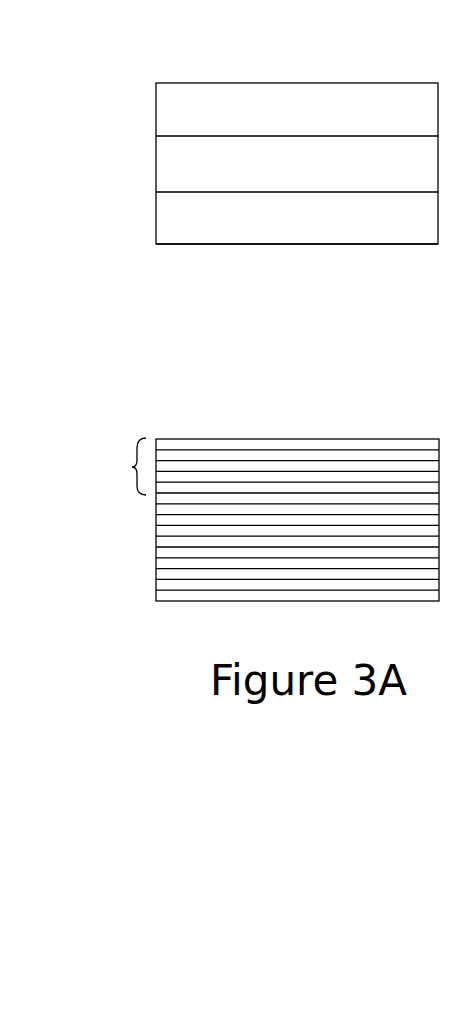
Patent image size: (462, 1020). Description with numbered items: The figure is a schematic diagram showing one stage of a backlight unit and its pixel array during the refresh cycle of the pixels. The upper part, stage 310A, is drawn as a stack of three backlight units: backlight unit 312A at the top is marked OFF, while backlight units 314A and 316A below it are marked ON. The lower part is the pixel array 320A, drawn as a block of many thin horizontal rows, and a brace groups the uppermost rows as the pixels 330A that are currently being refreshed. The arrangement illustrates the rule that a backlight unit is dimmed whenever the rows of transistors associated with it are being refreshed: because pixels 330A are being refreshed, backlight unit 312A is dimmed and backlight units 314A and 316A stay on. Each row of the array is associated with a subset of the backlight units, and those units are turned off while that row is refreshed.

The backlight unit stage 310A is at (252, 140).
The backlight unit 312A is at (155, 108).
The backlight unit 314A is at (155, 163).
The backlight unit 316A is at (155, 220).
The layered structure / stack 320A is at (263, 439).
The pixels 330A is at (132, 467).